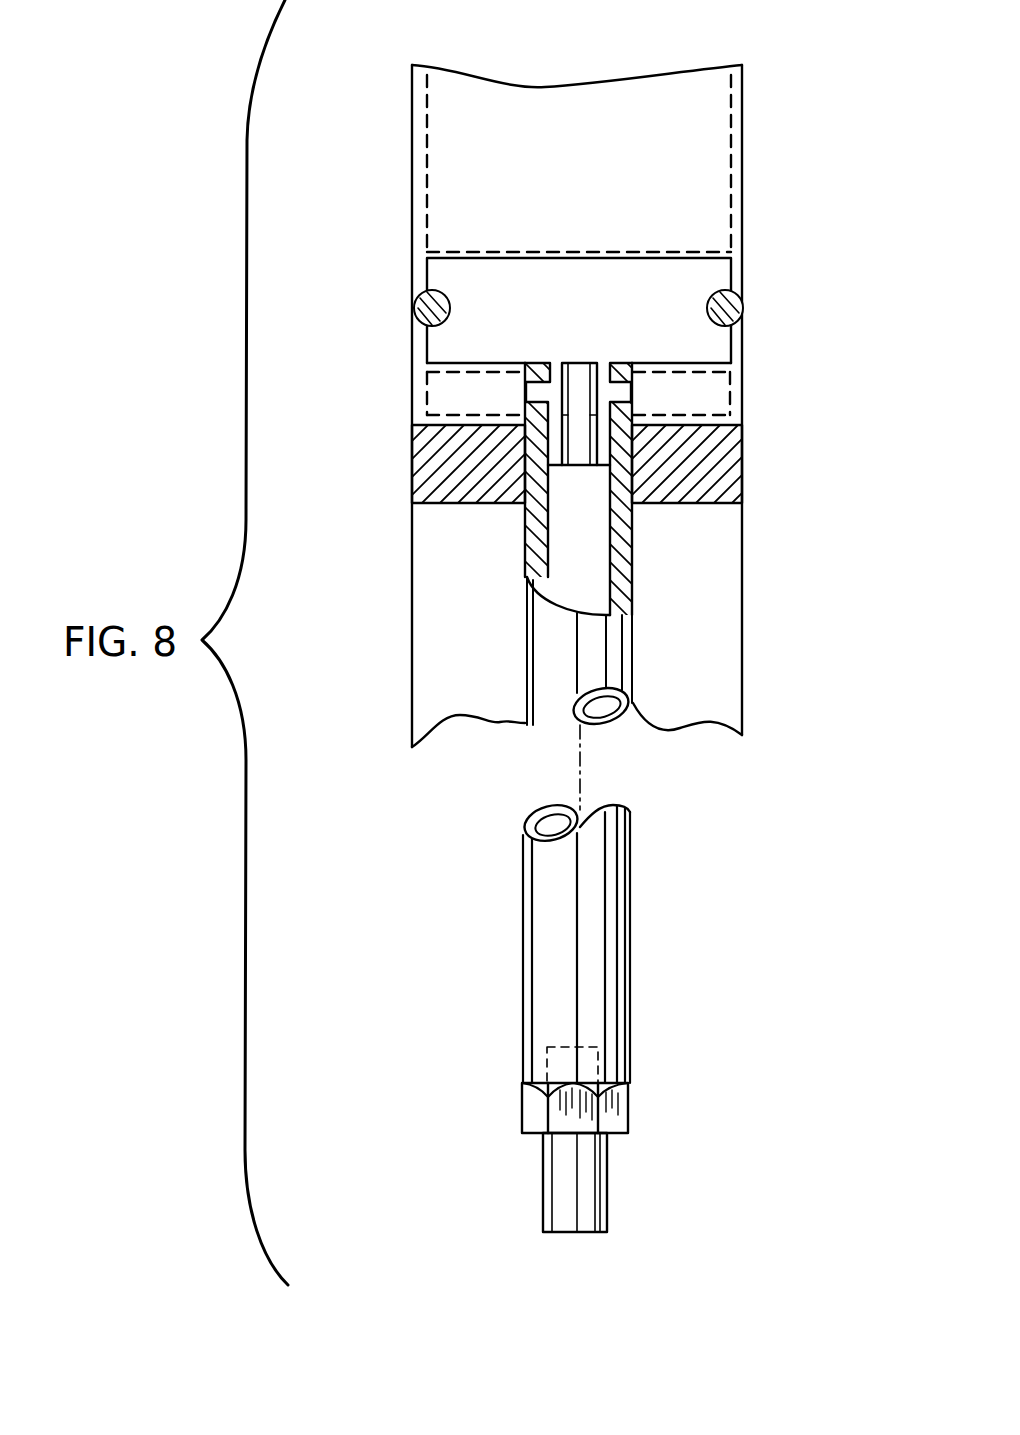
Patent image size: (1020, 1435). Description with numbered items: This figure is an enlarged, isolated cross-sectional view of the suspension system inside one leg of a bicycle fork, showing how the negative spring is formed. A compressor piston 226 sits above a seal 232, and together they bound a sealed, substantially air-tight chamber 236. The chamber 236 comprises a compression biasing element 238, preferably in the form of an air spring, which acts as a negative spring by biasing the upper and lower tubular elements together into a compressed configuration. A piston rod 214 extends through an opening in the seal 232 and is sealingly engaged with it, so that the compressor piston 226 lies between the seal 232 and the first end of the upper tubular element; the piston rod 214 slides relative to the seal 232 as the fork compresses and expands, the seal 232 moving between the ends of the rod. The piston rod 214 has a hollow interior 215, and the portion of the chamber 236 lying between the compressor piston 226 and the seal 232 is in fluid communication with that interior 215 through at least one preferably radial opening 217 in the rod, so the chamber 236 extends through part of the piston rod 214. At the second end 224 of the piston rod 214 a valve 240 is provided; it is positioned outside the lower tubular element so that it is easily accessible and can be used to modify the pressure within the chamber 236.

The piston rod 214 is at (633, 692).
The hollow interior 215 is at (613, 566).
The radial opening 217 is at (523, 390).
The second end 224 is at (520, 1077).
The compressor piston 226 is at (722, 277).
The seal 232 is at (488, 493).
The chamber 236 is at (700, 396).
The compression biasing element 238 is at (398, 442).
The valve 240 is at (607, 1194).